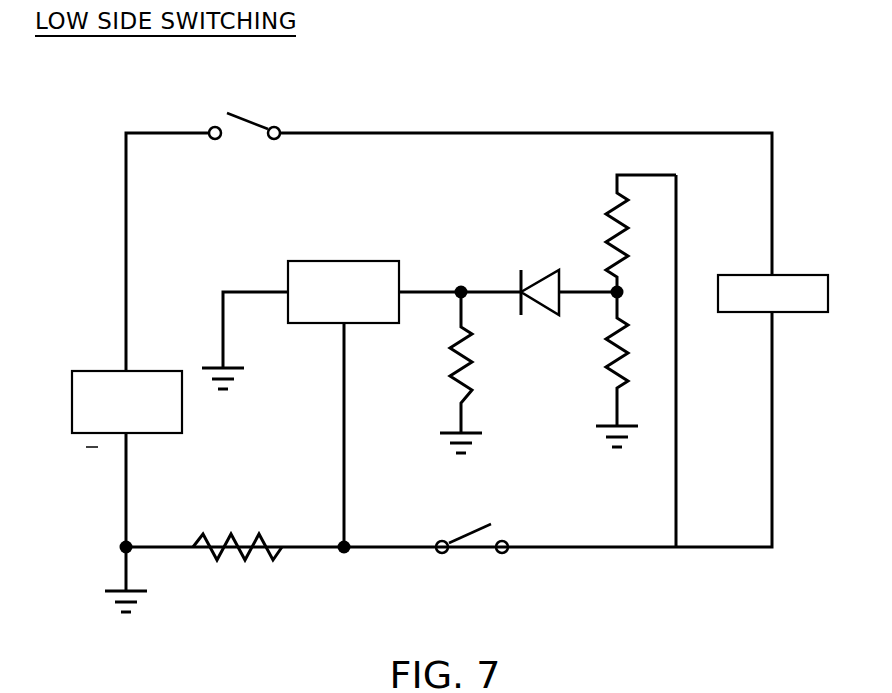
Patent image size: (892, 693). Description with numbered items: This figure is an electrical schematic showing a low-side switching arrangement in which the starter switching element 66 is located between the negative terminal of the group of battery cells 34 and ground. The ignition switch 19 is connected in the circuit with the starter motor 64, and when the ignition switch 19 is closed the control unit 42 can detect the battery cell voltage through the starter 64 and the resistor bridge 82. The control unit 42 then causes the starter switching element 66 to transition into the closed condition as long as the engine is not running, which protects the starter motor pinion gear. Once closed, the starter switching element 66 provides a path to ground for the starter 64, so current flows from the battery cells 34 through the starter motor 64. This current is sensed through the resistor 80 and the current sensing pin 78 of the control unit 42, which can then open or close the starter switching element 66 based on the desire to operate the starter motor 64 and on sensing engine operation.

The ignition switch 19 is at (247, 121).
The resistor bridge 82 is at (588, 230).
The starter motor 64 is at (790, 273).
The control unit 42 is at (303, 326).
The sensing pin 78 is at (345, 397).
The group of battery cells 34 is at (70, 401).
The sensing resistor 80 is at (242, 540).
The starter switching element 66 is at (480, 553).